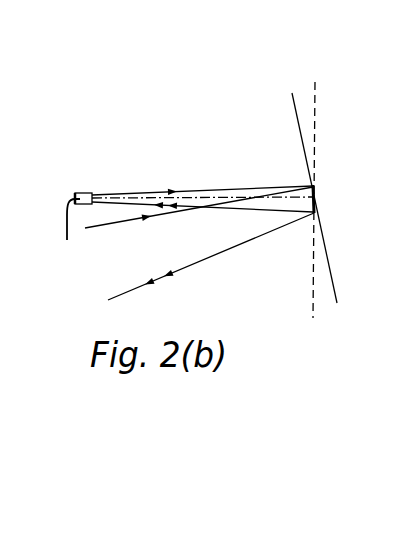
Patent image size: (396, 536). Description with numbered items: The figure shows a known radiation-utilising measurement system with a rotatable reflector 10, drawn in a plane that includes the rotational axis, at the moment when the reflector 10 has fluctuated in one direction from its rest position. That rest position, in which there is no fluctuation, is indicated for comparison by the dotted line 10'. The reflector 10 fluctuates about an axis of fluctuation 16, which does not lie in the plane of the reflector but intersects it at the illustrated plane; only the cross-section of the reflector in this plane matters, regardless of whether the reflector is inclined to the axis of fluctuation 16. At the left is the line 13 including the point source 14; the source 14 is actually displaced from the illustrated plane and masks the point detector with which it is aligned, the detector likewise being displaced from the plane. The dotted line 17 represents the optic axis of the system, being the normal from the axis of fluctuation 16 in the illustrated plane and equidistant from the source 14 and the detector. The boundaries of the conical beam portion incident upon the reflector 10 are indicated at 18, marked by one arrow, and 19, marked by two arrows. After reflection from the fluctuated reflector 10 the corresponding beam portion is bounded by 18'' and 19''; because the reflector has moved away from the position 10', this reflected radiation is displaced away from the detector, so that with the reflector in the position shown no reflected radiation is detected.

The reflector 10 is at (291, 194).
The non-fluctuated reflector position 10' is at (345, 200).
The line including the point source 13 is at (73, 231).
The point source 14 is at (77, 192).
The axis of fluctuation 16 is at (316, 197).
The optic axis 17 is at (281, 197).
The incident beam boundary 18 is at (202, 165).
The reflected beam boundary 18'' is at (199, 226).
The incident beam boundary 19 is at (202, 222).
The reflected beam boundary 19'' is at (211, 263).